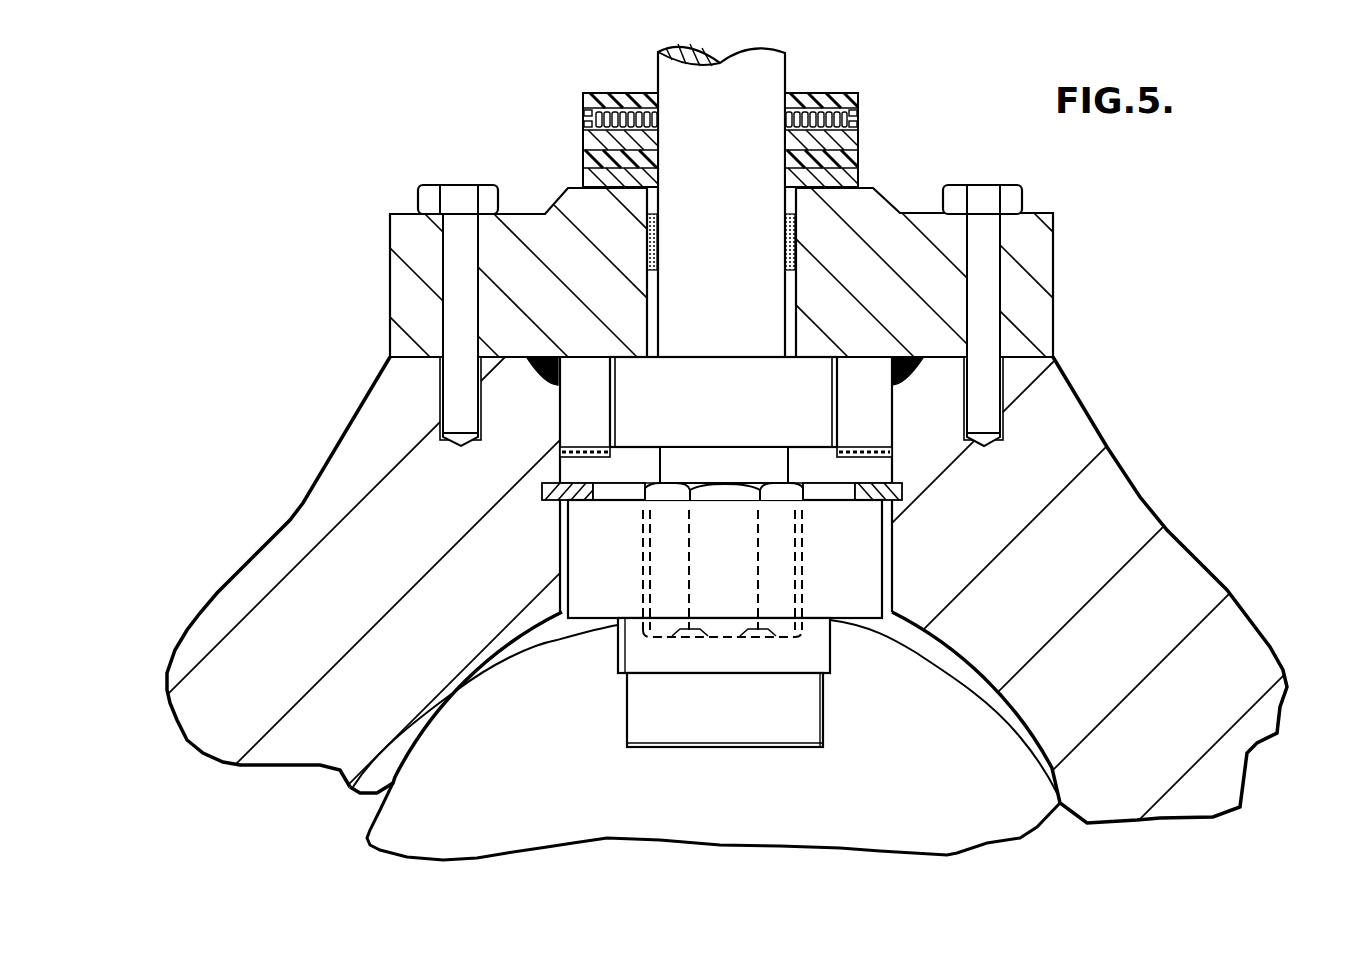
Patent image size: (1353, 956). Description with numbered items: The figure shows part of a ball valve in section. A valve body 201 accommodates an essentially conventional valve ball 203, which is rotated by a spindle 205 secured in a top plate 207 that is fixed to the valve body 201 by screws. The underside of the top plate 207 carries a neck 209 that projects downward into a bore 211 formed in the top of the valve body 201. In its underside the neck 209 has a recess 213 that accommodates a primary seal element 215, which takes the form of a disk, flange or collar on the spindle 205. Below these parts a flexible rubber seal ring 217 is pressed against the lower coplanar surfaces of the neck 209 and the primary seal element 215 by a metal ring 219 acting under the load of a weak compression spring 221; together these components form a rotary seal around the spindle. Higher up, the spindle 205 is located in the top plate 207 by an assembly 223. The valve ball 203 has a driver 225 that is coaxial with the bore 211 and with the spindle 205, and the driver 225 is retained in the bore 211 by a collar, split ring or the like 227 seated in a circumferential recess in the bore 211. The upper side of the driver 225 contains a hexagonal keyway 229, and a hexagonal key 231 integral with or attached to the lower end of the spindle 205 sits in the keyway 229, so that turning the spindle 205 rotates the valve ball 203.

The valve body 201 is at (1187, 607).
The valve ball 203 is at (952, 835).
The spindle 205 is at (762, 80).
The top plate 207 is at (1037, 303).
The neck 209 is at (557, 430).
The bore 211 is at (887, 493).
The recess 213 is at (557, 398).
The primary seal element 215 is at (648, 385).
The flexible rubber seal ring 217 is at (870, 457).
The metal ring 219 is at (870, 487).
The weak compression spring 221 is at (657, 463).
The assembly 223 is at (878, 149).
The driver 225 is at (655, 712).
The collar, split ring or the like 227 is at (912, 495).
The hexagonal keyway 229 is at (832, 655).
The hexagonal key 231 is at (780, 582).